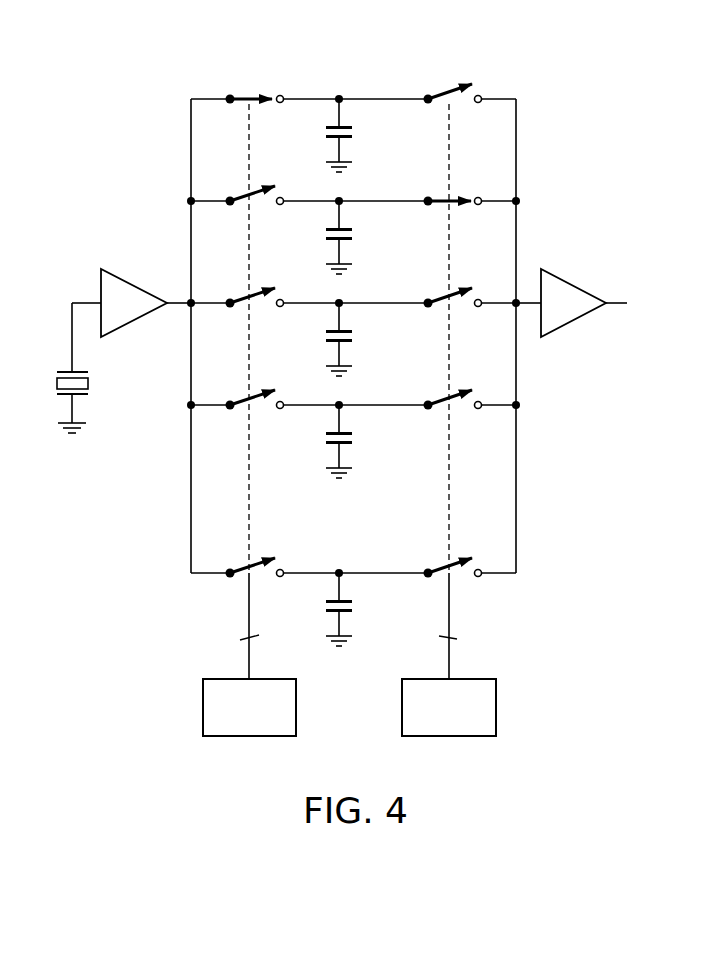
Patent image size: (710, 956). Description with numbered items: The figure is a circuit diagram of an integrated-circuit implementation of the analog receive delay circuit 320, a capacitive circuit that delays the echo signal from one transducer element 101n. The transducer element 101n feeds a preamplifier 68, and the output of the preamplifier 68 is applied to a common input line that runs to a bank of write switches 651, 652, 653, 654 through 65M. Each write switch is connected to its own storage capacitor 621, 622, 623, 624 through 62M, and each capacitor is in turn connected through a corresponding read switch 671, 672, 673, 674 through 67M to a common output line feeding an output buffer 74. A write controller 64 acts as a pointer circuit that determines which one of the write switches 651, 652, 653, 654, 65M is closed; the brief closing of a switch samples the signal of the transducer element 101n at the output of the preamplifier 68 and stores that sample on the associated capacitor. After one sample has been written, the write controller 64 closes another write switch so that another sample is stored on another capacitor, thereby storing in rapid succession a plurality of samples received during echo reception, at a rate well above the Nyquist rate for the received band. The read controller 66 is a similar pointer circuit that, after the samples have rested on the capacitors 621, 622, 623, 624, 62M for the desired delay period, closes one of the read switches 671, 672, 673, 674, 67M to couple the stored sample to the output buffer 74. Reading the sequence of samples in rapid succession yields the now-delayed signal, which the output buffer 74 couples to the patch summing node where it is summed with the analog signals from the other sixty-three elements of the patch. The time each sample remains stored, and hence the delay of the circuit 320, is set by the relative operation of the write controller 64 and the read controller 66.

The write switch 651 is at (229, 94).
The write switch 652 is at (230, 196).
The write switch 653 is at (255, 298).
The write switch 654 is at (255, 400).
The write switch 65M is at (230, 568).
The read switch 671 is at (478, 94).
The read switch 672 is at (478, 196).
The read switch 673 is at (453, 298).
The read switch 674 is at (453, 400).
The read switch 67M is at (479, 568).
The capacitor 621 is at (352, 131).
The capacitor 622 is at (352, 233).
The capacitor 623 is at (352, 335).
The capacitor 624 is at (339, 439).
The capacitor 62M is at (352, 603).
The preamplifier 68 is at (134, 282).
The output buffer 74 is at (573, 282).
The transducer element 101n is at (88, 385).
The write controller 64 is at (203, 703).
The read controller 66 is at (496, 703).
The analog receive delay circuit 320 is at (528, 484).